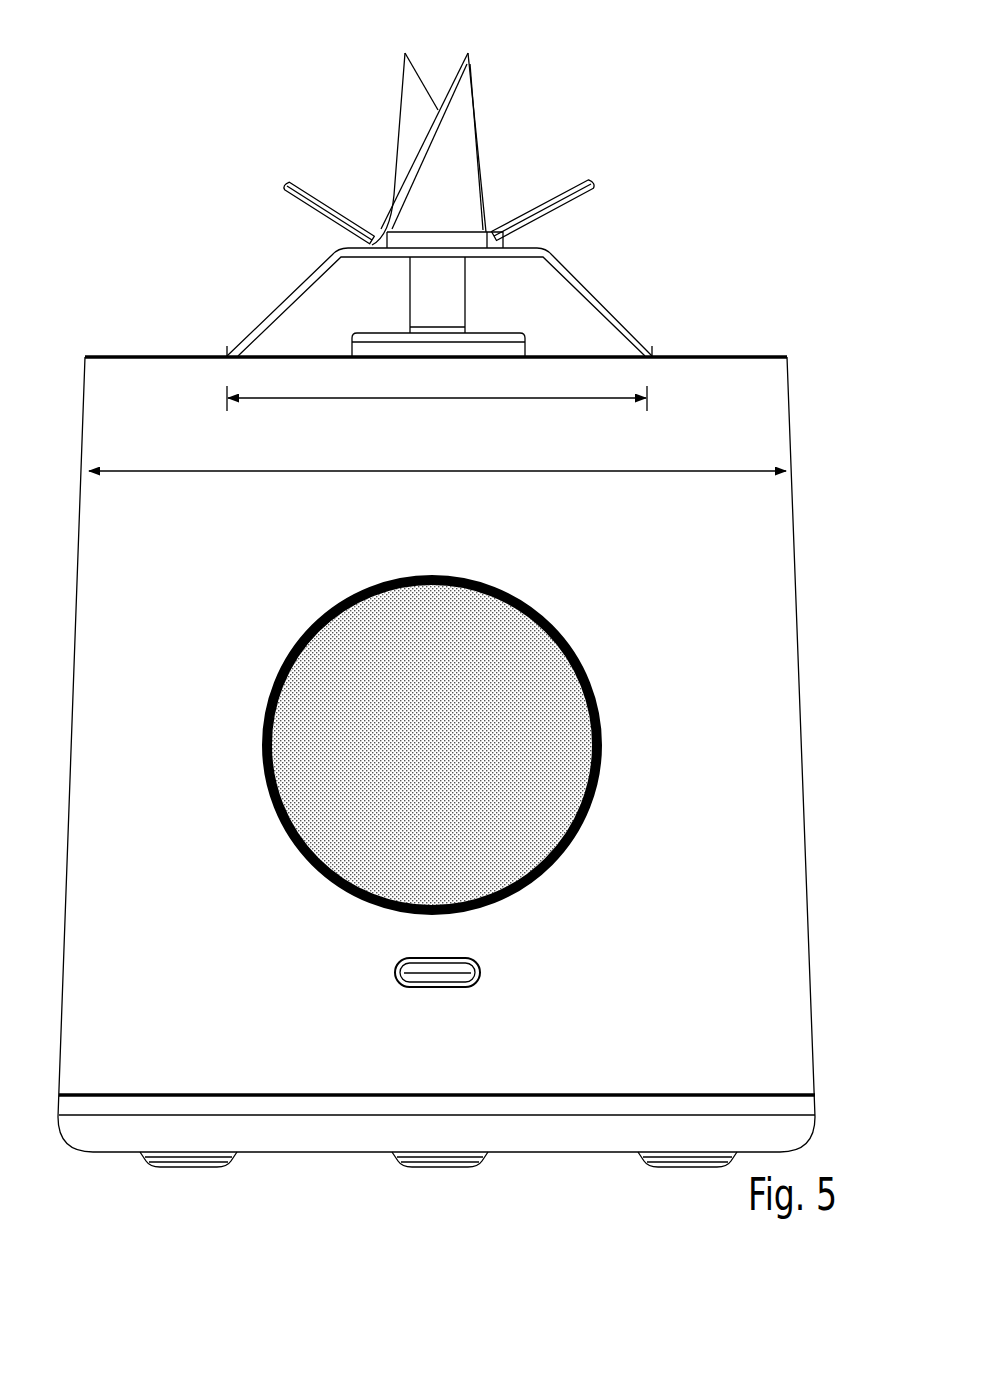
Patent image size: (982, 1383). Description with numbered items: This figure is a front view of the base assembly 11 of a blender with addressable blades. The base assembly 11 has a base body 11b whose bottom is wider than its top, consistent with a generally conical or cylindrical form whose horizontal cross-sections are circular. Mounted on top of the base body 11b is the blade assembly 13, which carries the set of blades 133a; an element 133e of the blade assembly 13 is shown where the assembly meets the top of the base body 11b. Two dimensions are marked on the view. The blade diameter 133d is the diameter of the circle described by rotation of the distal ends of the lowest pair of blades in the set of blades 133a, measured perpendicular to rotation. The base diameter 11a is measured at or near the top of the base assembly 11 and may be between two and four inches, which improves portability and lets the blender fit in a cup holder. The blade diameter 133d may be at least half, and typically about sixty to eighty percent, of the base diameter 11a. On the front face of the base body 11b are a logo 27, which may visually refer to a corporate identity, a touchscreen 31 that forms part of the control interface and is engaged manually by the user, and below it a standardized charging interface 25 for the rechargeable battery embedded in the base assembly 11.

The blade assembly 13 is at (249, 198).
The set of blades 133a is at (429, 30).
The blade assembly base plate 133e is at (559, 334).
The blade diameter 133d is at (532, 388).
The base assembly 11 is at (687, 312).
The base body 11b is at (851, 334).
The base diameter 11a is at (514, 460).
The logo 27 is at (630, 576).
The touchscreen 31 is at (713, 896).
The standardized charging interface 25 is at (628, 1012).